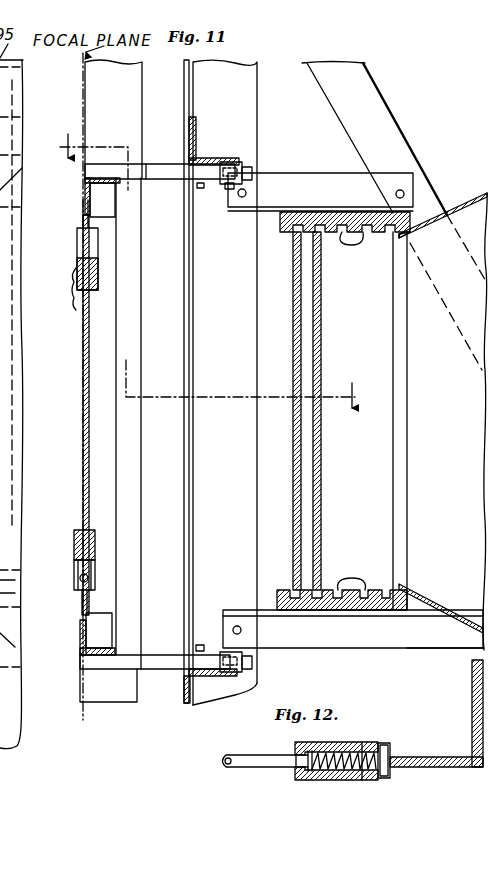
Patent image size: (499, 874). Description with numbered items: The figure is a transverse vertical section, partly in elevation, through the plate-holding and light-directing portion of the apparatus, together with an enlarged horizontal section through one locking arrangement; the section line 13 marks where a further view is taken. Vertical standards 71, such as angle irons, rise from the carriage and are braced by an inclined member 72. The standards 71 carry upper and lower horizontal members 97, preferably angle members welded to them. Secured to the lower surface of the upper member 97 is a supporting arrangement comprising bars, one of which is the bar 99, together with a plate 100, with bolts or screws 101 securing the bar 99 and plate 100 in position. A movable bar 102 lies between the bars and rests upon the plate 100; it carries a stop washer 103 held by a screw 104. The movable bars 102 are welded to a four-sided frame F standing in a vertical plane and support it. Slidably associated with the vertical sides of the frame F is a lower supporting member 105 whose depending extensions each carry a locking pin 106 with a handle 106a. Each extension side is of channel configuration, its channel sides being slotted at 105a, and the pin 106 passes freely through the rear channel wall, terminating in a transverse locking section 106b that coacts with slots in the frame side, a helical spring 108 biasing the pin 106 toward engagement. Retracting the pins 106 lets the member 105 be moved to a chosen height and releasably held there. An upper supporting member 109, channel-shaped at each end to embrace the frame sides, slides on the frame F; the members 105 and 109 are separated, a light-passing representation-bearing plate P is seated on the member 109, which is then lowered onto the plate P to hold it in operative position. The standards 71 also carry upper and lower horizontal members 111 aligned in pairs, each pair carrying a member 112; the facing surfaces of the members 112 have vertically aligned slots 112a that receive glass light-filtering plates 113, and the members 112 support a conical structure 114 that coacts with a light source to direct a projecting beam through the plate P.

In FIG. 11, the section line 13- 13 is at (58, 147).
In FIG. 11, the vertical standard 71 is at (240, 102).
In FIG. 11, the inclined member 72 is at (383, 112).
In FIG. 11, the horizontal member 97 is at (196, 135).
In FIG. 11, the bar 99 is at (165, 179).
In FIG. 11, the plate 100 is at (229, 190).
In FIG. 11, the bolt or screw 101 is at (200, 188).
In FIG. 11, the movable bar 102 is at (133, 171).
In FIG. 11, the stop washer 103 is at (244, 162).
In FIG. 11, the screw 104 is at (252, 176).
In FIG. 11, the lower supporting member 105 is at (74, 540).
In FIG. 12, the lower supporting member 105 is at (315, 734).
In FIG. 12, the slot 105a is at (372, 746).
In FIG. 11, the locking pin 106 is at (76, 578).
In FIG. 12, the locking pin 106 is at (240, 745).
In FIG. 12, the handle 106a is at (226, 767).
In FIG. 11, the transverse locking section 106b is at (82, 605).
In FIG. 12, the transverse locking section 106b is at (462, 790).
In FIG. 12, the helical spring 108 is at (310, 780).
In FIG. 11, the upper supporting member 109 is at (77, 262).
In FIG. 11, the horizontal member 111 is at (330, 164).
In FIG. 11, the member 112 is at (352, 212).
In FIG. 11, the slot 112a is at (352, 245).
In FIG. 11, the light-filtering plate 113 is at (301, 350).
In FIG. 11, the conical structure 114 is at (470, 203).
In FIG. 11, the frame F is at (85, 203).
In FIG. 12, the frame F is at (472, 700).
In FIG. 11, the light-passing representation-bearing plate P is at (83, 402).